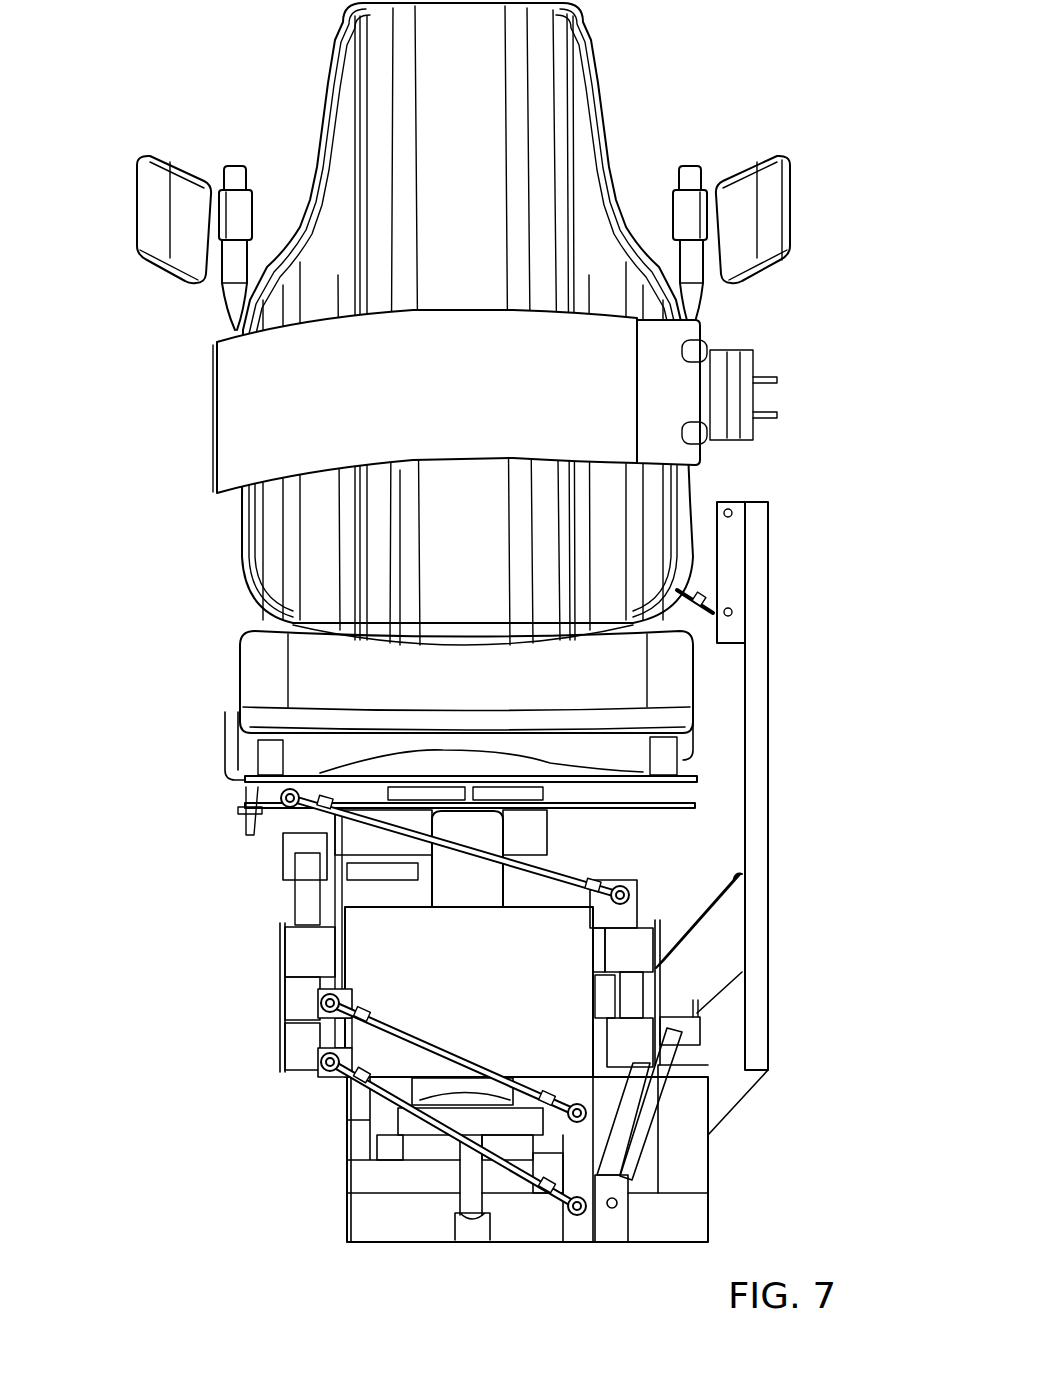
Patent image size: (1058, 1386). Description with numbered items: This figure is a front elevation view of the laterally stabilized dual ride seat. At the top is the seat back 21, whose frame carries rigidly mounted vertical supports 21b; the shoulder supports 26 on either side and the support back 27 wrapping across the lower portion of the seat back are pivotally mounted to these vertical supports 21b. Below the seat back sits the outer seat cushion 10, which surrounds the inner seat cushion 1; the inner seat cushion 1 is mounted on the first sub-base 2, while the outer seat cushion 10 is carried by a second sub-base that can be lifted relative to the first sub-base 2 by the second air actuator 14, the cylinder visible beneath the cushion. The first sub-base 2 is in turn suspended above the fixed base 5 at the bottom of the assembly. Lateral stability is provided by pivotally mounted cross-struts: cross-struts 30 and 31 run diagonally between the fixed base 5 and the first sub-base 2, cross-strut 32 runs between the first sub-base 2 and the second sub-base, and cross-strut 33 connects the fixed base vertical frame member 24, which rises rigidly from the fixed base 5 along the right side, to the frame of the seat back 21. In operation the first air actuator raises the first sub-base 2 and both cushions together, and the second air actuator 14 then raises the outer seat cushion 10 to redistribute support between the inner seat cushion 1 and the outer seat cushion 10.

The seat back 21 is at (590, 65).
The shoulder supports 26 is at (137, 198).
The vertical supports 21b is at (232, 295).
The support back 27 is at (265, 413).
The cross-strut 33 is at (715, 502).
The fixed base vertical frame member 24 is at (770, 800).
The outer seat cushion 10 is at (680, 680).
The inner seat cushion 1 is at (530, 828).
The second air actuator 14 is at (445, 876).
The first sub-base 2 is at (347, 943).
The fixed base 5 is at (345, 1170).
The cross-strut 32 is at (362, 812).
The cross-strut 31 is at (415, 1050).
The cross-strut 30 is at (560, 1118).